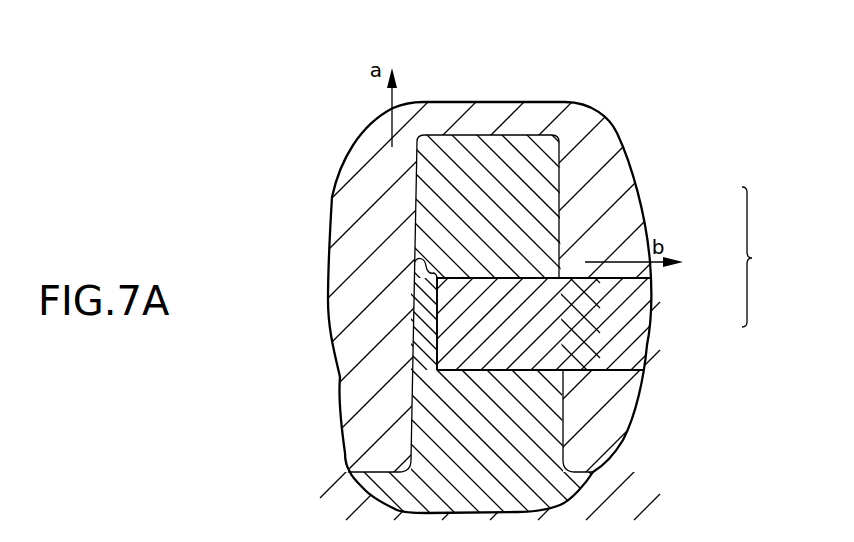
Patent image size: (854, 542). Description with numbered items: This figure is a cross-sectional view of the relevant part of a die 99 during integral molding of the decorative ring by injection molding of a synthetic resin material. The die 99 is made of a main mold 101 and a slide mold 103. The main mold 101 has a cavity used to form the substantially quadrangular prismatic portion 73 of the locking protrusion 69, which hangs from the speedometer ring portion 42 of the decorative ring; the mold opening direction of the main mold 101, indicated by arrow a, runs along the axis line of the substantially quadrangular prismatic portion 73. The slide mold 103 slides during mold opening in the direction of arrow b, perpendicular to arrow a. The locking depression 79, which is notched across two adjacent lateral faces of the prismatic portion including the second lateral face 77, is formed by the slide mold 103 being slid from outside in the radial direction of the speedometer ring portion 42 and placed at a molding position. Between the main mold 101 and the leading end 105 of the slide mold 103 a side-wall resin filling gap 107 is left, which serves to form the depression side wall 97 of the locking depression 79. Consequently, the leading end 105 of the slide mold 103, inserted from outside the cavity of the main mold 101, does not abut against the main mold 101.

The speedometer ring portion 42 is at (403, 485).
The locking protrusion 69 is at (529, 118).
The substantially quadrangular prismatic portion 73 is at (481, 150).
The second lateral face 77 is at (560, 165).
The locking depression 79 is at (545, 345).
The depression side wall 97 is at (427, 315).
The die 99 is at (763, 257).
The main mold 101 is at (592, 210).
The slide mold 103 is at (592, 320).
The leading end 105 is at (437, 349).
The side-wall resin filling gap 107 is at (413, 261).